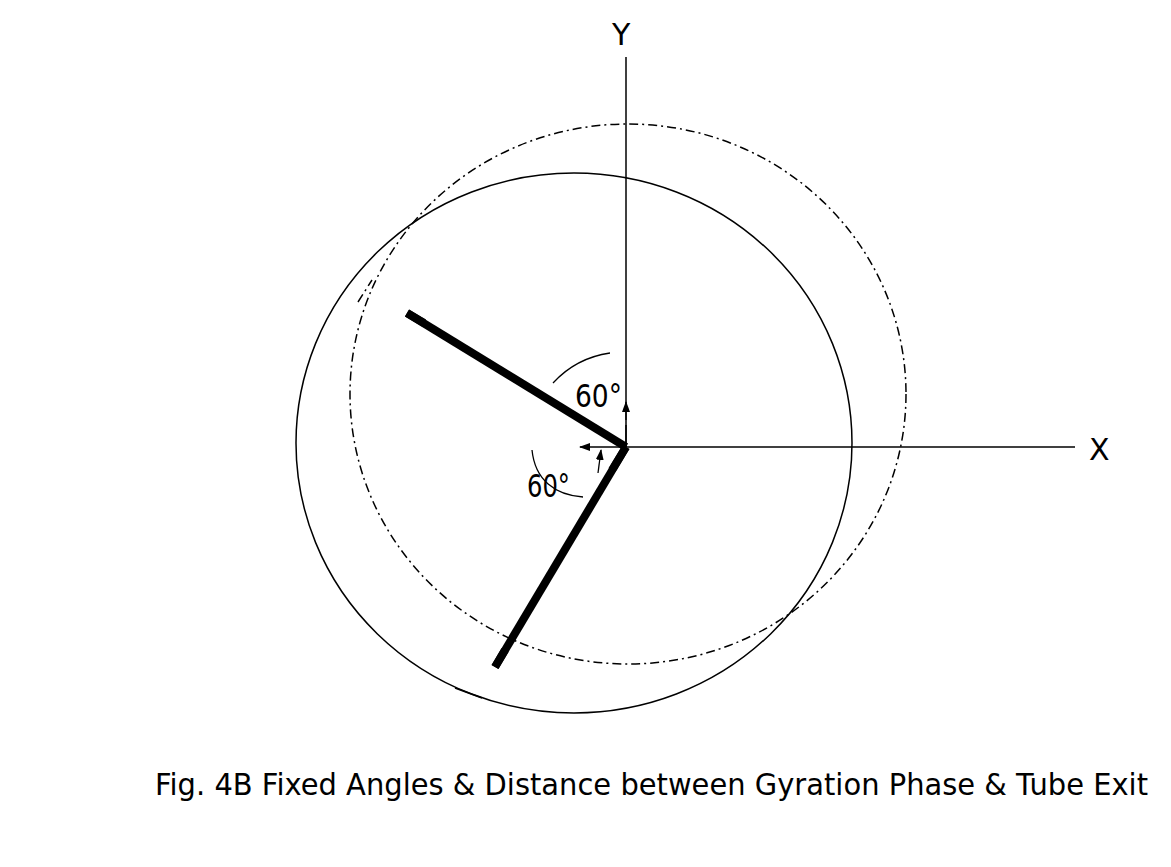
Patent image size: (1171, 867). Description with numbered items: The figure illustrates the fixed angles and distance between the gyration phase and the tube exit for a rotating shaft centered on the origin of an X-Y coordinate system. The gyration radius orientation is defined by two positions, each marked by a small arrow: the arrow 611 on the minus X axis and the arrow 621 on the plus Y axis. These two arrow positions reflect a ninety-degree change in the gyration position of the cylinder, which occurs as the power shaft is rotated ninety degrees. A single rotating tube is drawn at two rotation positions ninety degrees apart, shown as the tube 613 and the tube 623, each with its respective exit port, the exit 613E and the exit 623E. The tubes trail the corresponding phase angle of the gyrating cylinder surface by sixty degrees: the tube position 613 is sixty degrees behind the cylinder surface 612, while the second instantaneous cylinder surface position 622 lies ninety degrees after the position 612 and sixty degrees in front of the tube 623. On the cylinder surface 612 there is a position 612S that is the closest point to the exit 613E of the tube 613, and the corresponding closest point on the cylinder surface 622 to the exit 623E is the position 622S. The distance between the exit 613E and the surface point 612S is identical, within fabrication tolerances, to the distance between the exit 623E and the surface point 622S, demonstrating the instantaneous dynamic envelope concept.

The cylinder surface 612 is at (293, 405).
The closest point on cylinder surface 612S is at (468, 693).
The rotating tube position 613 is at (535, 575).
The tube exit port 613E is at (493, 667).
The gyration radius position arrow 611 is at (612, 480).
The gyration radius position arrow 621 is at (629, 420).
The cylinder surface 622 is at (780, 160).
The closest point on cylinder surface 622S is at (365, 290).
The rotating tube position 623 is at (512, 322).
The tube exit port 623E is at (407, 310).